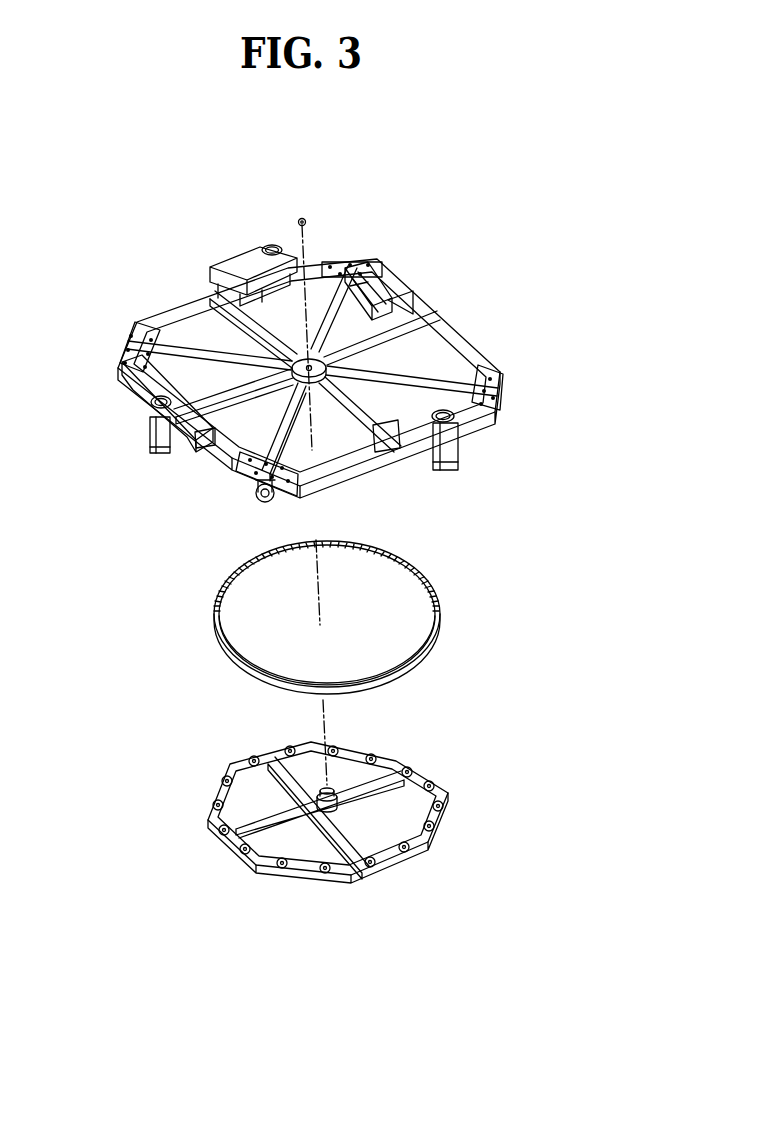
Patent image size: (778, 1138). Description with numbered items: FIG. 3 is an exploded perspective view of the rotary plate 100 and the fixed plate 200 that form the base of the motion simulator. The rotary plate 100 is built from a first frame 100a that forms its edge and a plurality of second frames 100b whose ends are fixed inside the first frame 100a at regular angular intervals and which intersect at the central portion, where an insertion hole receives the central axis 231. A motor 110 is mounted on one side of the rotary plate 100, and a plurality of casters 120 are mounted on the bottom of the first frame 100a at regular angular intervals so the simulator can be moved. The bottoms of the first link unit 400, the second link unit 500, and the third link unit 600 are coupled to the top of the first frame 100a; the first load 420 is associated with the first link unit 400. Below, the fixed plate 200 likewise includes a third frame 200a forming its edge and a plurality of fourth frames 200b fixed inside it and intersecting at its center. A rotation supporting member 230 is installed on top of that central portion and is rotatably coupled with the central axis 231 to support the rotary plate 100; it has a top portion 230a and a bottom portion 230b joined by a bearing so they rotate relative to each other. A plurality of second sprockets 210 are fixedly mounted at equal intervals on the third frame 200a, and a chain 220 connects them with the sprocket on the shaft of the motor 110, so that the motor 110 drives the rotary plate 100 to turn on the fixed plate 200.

The rotary plate 100 is at (138, 218).
The first frame 100a is at (192, 348).
The second frame 100b is at (140, 323).
The motor 110 is at (397, 302).
The caster 120 is at (260, 503).
The fixed plate 200 is at (285, 985).
The third frame 200a is at (262, 873).
The fourth frame 200b is at (337, 882).
The second sprocket 210 is at (242, 850).
The chain 220 is at (440, 607).
The rotation supporting member 230 is at (533, 967).
The top portion 230a is at (428, 840).
The bottom portion 230b is at (395, 757).
The central axis 231 is at (326, 789).
The first link unit 400 is at (134, 415).
The first load 420 is at (303, 217).
The second link unit 500 is at (237, 252).
The third link unit 600 is at (422, 452).